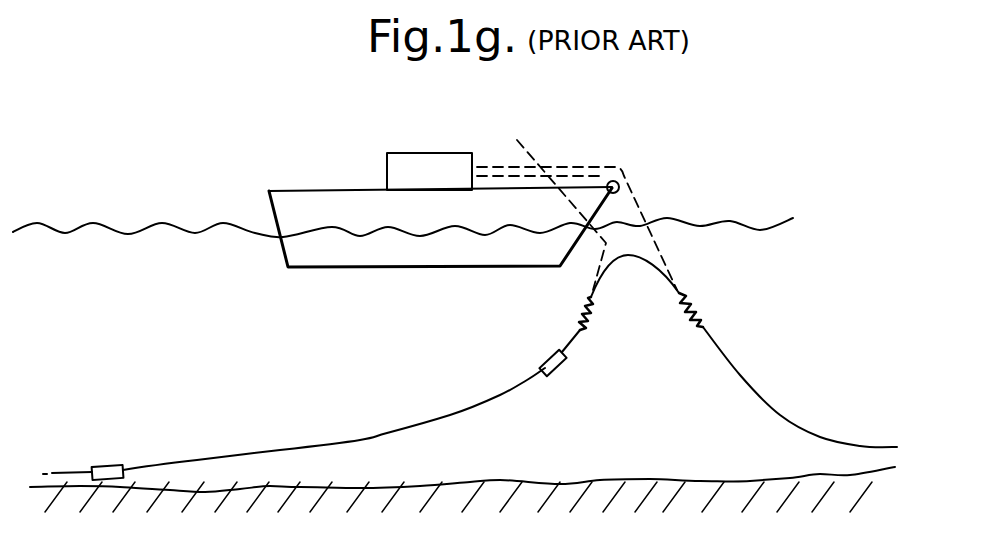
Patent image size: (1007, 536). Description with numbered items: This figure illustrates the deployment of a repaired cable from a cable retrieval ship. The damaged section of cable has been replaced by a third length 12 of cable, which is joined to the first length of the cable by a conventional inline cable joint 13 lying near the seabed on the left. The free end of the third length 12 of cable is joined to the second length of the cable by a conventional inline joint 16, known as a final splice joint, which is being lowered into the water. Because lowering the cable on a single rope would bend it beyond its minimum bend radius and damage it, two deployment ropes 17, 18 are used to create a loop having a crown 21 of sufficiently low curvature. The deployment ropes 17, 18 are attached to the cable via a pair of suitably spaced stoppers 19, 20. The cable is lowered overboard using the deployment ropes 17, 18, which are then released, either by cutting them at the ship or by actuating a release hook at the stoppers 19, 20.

The third length of cable 12 is at (387, 433).
The inline cable joint 13 is at (108, 463).
The final splice joint 16 is at (560, 367).
The deployment rope 17 is at (582, 166).
The deployment rope 18 is at (510, 203).
The stopper 19 is at (581, 311).
The stopper 20 is at (702, 313).
The crown 21 is at (628, 257).